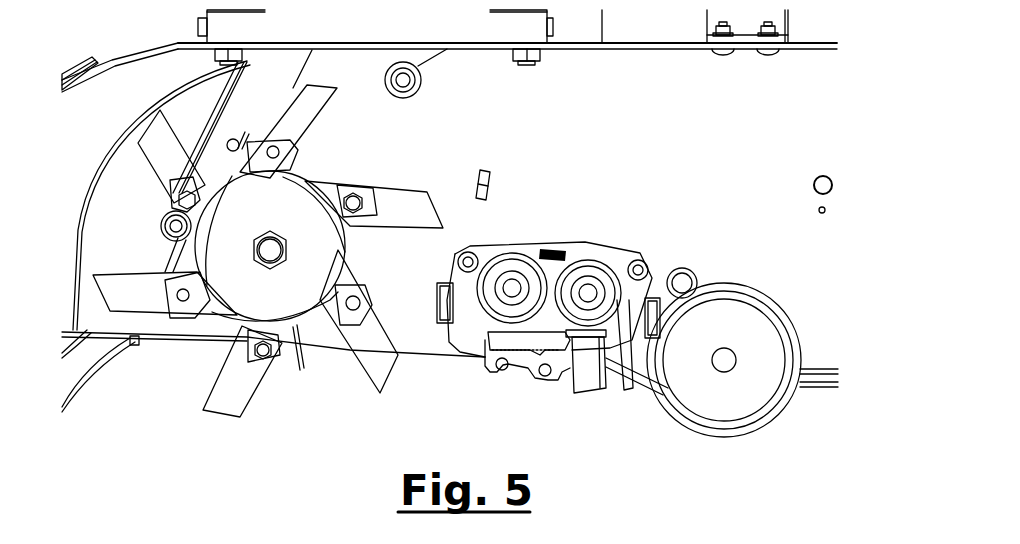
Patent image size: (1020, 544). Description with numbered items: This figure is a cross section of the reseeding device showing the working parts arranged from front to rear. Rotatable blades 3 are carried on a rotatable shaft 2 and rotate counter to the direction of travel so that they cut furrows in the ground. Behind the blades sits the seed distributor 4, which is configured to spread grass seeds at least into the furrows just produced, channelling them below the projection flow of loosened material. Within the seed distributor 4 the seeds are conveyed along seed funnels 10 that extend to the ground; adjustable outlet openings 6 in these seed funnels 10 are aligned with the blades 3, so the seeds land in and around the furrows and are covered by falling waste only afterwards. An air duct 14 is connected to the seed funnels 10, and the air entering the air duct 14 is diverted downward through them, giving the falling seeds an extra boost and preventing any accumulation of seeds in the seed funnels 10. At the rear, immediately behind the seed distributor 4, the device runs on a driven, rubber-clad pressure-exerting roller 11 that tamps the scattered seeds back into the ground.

The rotatable shaft 2 is at (270, 250).
The rotatable blades 3 is at (233, 405).
The seed distributor 4 is at (576, 227).
The outlet openings 6 is at (595, 396).
The seed funnels 10 is at (585, 363).
The pressure-exerting roller 11 is at (775, 410).
The air duct 14 is at (518, 345).